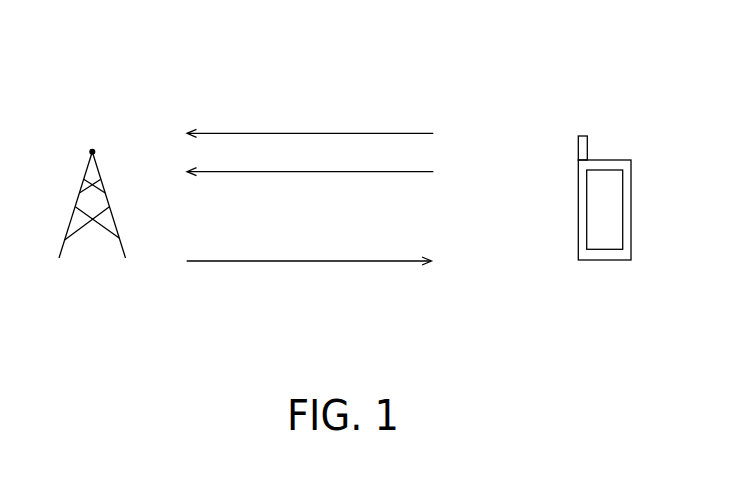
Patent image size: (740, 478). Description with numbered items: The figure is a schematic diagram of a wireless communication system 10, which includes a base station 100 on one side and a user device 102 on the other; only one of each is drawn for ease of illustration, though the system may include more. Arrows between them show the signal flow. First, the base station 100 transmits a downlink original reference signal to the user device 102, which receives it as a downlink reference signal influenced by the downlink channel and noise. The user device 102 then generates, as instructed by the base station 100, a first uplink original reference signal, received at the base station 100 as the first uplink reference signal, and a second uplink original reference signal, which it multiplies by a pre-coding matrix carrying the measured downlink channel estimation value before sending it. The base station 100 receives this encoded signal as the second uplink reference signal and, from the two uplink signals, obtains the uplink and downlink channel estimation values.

The wireless communication system 10 is at (49, 38).
The base station 100 is at (77, 205).
The user device 102 is at (632, 170).